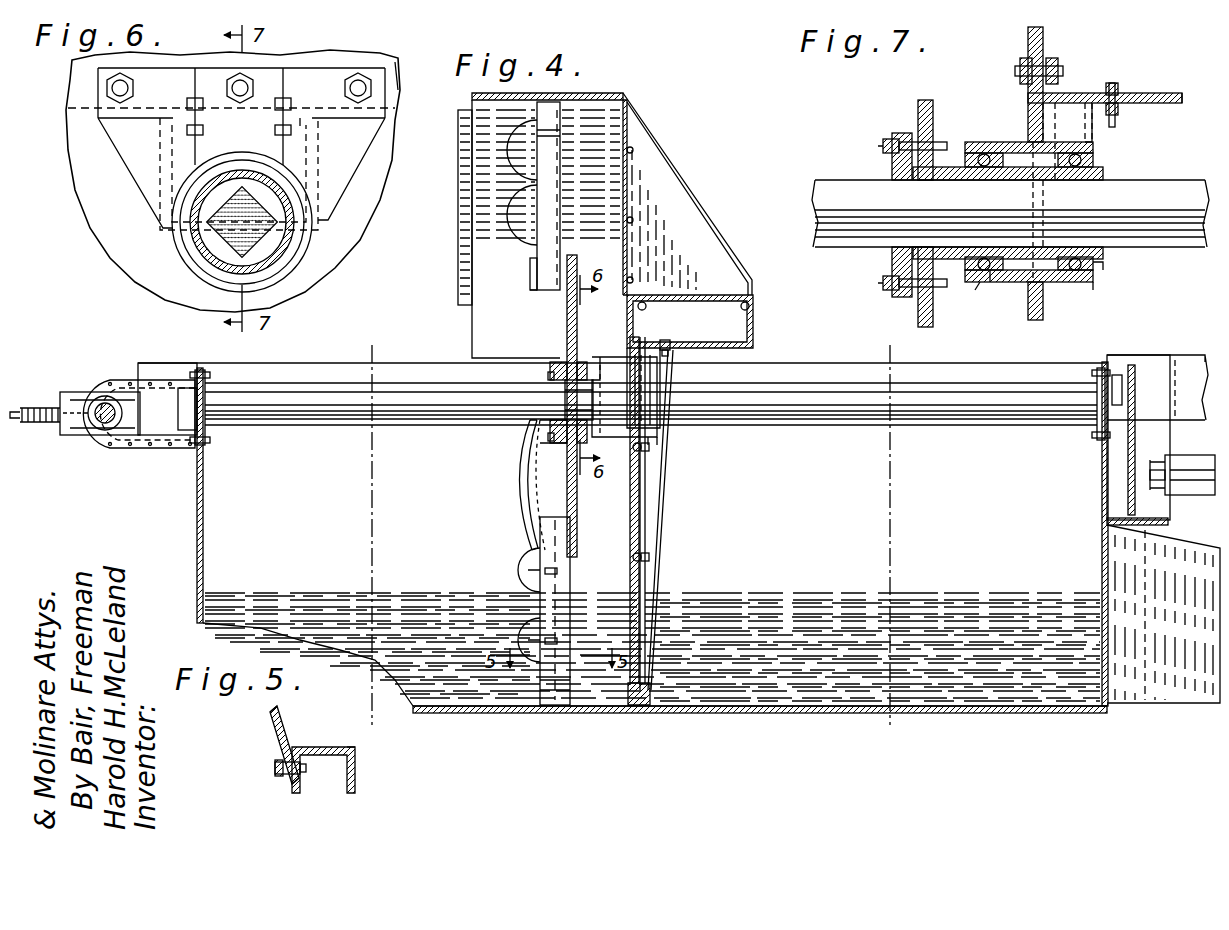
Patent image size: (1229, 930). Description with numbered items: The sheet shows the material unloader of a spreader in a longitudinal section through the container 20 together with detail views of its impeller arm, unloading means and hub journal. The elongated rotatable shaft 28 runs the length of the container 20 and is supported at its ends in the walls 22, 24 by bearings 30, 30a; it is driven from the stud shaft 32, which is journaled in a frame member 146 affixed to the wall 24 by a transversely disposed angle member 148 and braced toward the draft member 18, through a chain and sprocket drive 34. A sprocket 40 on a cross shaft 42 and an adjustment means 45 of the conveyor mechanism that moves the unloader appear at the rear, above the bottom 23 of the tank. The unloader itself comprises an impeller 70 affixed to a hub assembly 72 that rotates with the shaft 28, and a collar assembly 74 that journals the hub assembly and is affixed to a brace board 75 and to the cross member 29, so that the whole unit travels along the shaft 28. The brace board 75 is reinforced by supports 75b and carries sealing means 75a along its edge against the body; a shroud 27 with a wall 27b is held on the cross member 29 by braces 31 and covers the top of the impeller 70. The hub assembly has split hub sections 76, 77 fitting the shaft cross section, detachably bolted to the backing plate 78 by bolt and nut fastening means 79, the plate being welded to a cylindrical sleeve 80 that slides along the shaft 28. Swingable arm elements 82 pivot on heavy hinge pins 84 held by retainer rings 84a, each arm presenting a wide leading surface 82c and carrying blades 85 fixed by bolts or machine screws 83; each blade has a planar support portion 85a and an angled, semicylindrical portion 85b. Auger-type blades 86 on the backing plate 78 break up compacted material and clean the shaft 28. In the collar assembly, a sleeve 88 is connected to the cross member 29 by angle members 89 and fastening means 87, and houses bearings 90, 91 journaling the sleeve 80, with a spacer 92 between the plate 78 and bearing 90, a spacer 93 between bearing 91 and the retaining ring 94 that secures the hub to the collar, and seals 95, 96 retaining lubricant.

In FIG. 4, the draft member 18 is at (1180, 705).
In FIG. 4, the container 20 is at (1085, 715).
In FIG. 4, the wall 22 is at (205, 545).
In FIG. 4, the bottom plate 23 is at (480, 715).
In FIG. 4, the wall 24 is at (1100, 445).
In FIG. 4, the shroud 27 is at (472, 112).
In FIG. 4, the wall 27b is at (628, 120).
In FIG. 6, the rotatable shaft 28 is at (215, 242).
In FIG. 7, the rotatable shaft 28 is at (830, 190).
In FIG. 4, the rotatable shaft 28 is at (430, 425).
In FIG. 6, the cross member 29 is at (388, 60).
In FIG. 7, the cross member 29 is at (1178, 100).
In FIG. 4, the cross member 29 is at (753, 320).
In FIG. 4, the bearing 30 is at (203, 432).
In FIG. 4, the bearing 30a is at (1095, 418).
In FIG. 4, the braces 31 is at (678, 188).
In FIG. 4, the stud shaft 32 is at (1170, 488).
In FIG. 4, the chain and sprocket drive 34 is at (1138, 448).
In FIG. 4, the sprocket 40 is at (102, 380).
In FIG. 4, the cross shaft 42 is at (108, 425).
In FIG. 4, the adjustment means 45 is at (42, 398).
In FIG. 4, the impeller 70 is at (510, 530).
In FIG. 7, the hub assembly 72 is at (880, 292).
In FIG. 4, the hub assembly 72 is at (518, 428).
In FIG. 6, the collar assembly 74 is at (115, 160).
In FIG. 7, the collar assembly 74 is at (1010, 292).
In FIG. 4, the collar assembly 74 is at (650, 445).
In FIG. 7, the brace board 75 is at (1045, 300).
In FIG. 4, the brace board 75 is at (630, 620).
In FIG. 4, the sealing means 75a is at (652, 688).
In FIG. 4, the supports 75b is at (660, 540).
In FIG. 7, the hub section 76 is at (895, 250).
In FIG. 4, the hub section 76 is at (525, 440).
In FIG. 7, the hub section 77 is at (895, 160).
In FIG. 4, the hub section 77 is at (556, 362).
In FIG. 7, the backing plate 78 is at (922, 108).
In FIG. 4, the backing plate 78 is at (578, 488).
In FIG. 7, the bolt and nut fastening means 79 is at (886, 140).
In FIG. 6, the cylindrical sleeve 80 is at (275, 258).
In FIG. 7, the cylindrical sleeve 80 is at (945, 292).
In FIG. 4, the cylindrical sleeve 80 is at (555, 382).
In FIG. 5, the arm element 82 is at (330, 765).
In FIG. 4, the arm element 82 is at (553, 240).
In FIG. 5, the leading surface 82c is at (340, 748).
In FIG. 5, the bolts or machine screws 83 is at (276, 768).
In FIG. 4, the bolts or machine screws 83 is at (535, 565).
In FIG. 4, the hinge pins 84 is at (530, 275).
In FIG. 4, the retainer rings 84a is at (533, 292).
In FIG. 5, the blade 85 is at (278, 748).
In FIG. 4, the blade 85 is at (520, 152).
In FIG. 5, the support portion 85a is at (290, 785).
In FIG. 5, the angled portion 85b is at (280, 712).
In FIG. 4, the auger-type blades 86 is at (522, 488).
In FIG. 6, the fastening means 87 is at (243, 78).
In FIG. 7, the fastening means 87 is at (1050, 70).
In FIG. 4, the fastening means 87 is at (644, 312).
In FIG. 7, the sleeve 88 is at (1032, 284).
In FIG. 4, the sleeve 88 is at (648, 470).
In FIG. 6, the angle members 89 is at (355, 146).
In FIG. 7, the angle members 89 is at (1000, 112).
In FIG. 4, the angle members 89 is at (665, 378).
In FIG. 7, the bearing 90 is at (978, 290).
In FIG. 7, the bearing 91 is at (1080, 284).
In FIG. 6, the spacer 92 is at (290, 245).
In FIG. 7, the spacer 92 is at (942, 165).
In FIG. 4, the spacer 92 is at (577, 352).
In FIG. 7, the spacer 93 is at (1092, 157).
In FIG. 7, the retaining ring 94 is at (1098, 255).
In FIG. 4, the retaining ring 94 is at (652, 442).
In FIG. 7, the seal 95 is at (1095, 270).
In FIG. 7, the seal 96 is at (1000, 285).
In FIG. 4, the frame member 146 is at (1170, 520).
In FIG. 4, the angle member 148 is at (1110, 552).